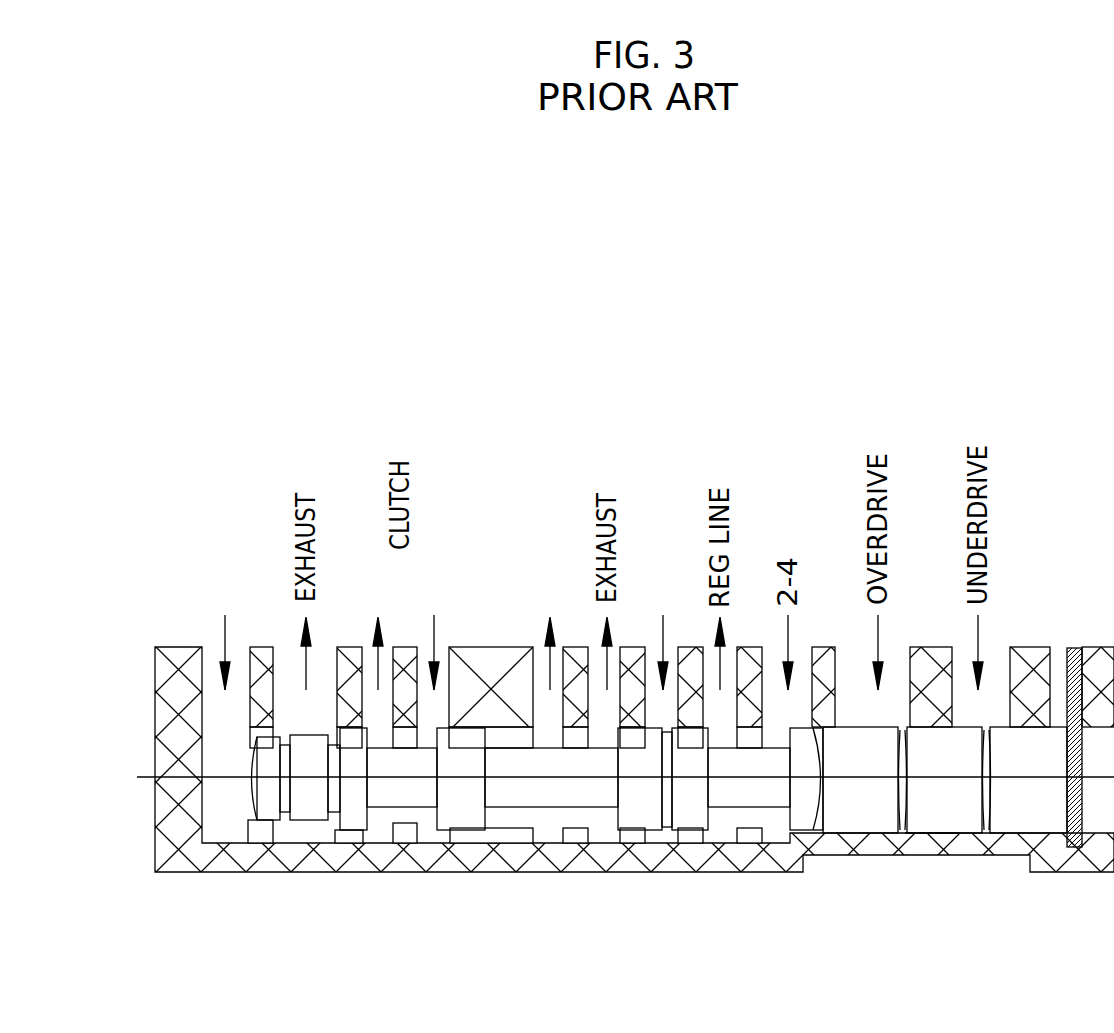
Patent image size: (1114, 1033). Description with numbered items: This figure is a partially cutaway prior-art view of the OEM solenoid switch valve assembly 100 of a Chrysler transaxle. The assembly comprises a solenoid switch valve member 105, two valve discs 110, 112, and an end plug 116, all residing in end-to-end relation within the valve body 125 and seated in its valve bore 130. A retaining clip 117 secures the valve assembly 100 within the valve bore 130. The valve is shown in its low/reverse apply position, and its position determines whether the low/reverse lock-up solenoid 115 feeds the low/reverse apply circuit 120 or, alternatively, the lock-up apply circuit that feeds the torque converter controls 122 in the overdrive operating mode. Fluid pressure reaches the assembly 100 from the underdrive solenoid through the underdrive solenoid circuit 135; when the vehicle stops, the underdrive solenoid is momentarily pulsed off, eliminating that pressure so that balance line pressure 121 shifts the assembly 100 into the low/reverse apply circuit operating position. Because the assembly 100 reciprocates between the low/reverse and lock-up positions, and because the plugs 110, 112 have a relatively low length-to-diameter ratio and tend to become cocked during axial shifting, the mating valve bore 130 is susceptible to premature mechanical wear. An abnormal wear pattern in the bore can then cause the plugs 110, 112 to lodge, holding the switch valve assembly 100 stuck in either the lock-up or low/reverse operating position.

The solenoid switch valve assembly 100 is at (590, 360).
The solenoid switch valve member 105 is at (538, 779).
The valve disc 110 is at (886, 774).
The valve disc 112 is at (970, 774).
The low/reverse lock-up solenoid 115 is at (447, 547).
The end plug 116 is at (1053, 774).
The retaining clip 117 is at (1076, 648).
The low/reverse apply circuit 120 is at (372, 526).
The balance line 121 is at (225, 526).
The torque converter controls 122 is at (536, 558).
The valve body 125 is at (160, 673).
The valve bore 130 is at (933, 840).
The underdrive solenoid circuit 135 is at (658, 526).